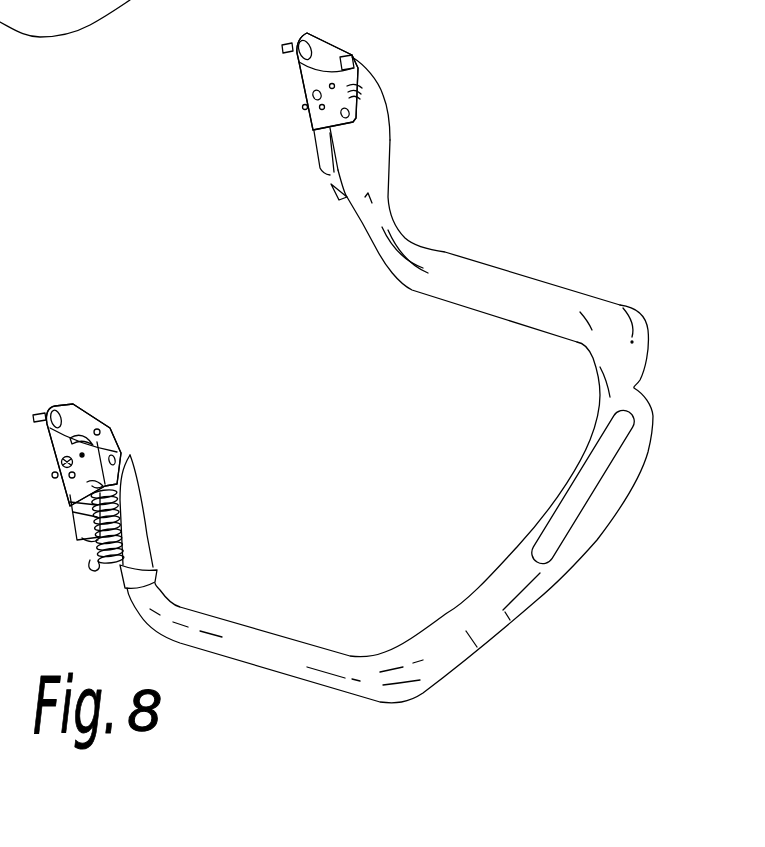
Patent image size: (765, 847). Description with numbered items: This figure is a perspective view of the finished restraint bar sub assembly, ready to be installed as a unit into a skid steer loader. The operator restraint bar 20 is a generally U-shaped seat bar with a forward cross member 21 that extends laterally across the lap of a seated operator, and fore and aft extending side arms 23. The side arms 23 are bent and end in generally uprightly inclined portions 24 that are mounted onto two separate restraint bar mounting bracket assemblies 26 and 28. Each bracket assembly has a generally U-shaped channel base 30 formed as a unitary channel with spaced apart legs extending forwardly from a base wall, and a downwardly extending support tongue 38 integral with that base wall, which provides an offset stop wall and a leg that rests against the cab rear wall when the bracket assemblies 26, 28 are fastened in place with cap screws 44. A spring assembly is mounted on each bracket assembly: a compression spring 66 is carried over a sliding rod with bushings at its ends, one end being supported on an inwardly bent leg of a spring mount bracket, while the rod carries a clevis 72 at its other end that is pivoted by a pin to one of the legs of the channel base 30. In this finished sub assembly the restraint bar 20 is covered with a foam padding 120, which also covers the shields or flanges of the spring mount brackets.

The operator restraint bar 20 is at (527, 515).
The forward cross member 21 is at (570, 462).
The side arms 23 is at (470, 272).
The uprightly inclined portions 24 is at (157, 557).
The restraint bar mounting bracket assembly 26 is at (369, 59).
The restraint bar mounting bracket assembly 28 is at (102, 494).
The channel base 30 is at (303, 77).
The support tongue 38 is at (320, 157).
The cap screws 44 is at (285, 43).
The compression spring 66 is at (92, 549).
The clevis 72 is at (72, 523).
The foam padding 120 is at (390, 421).